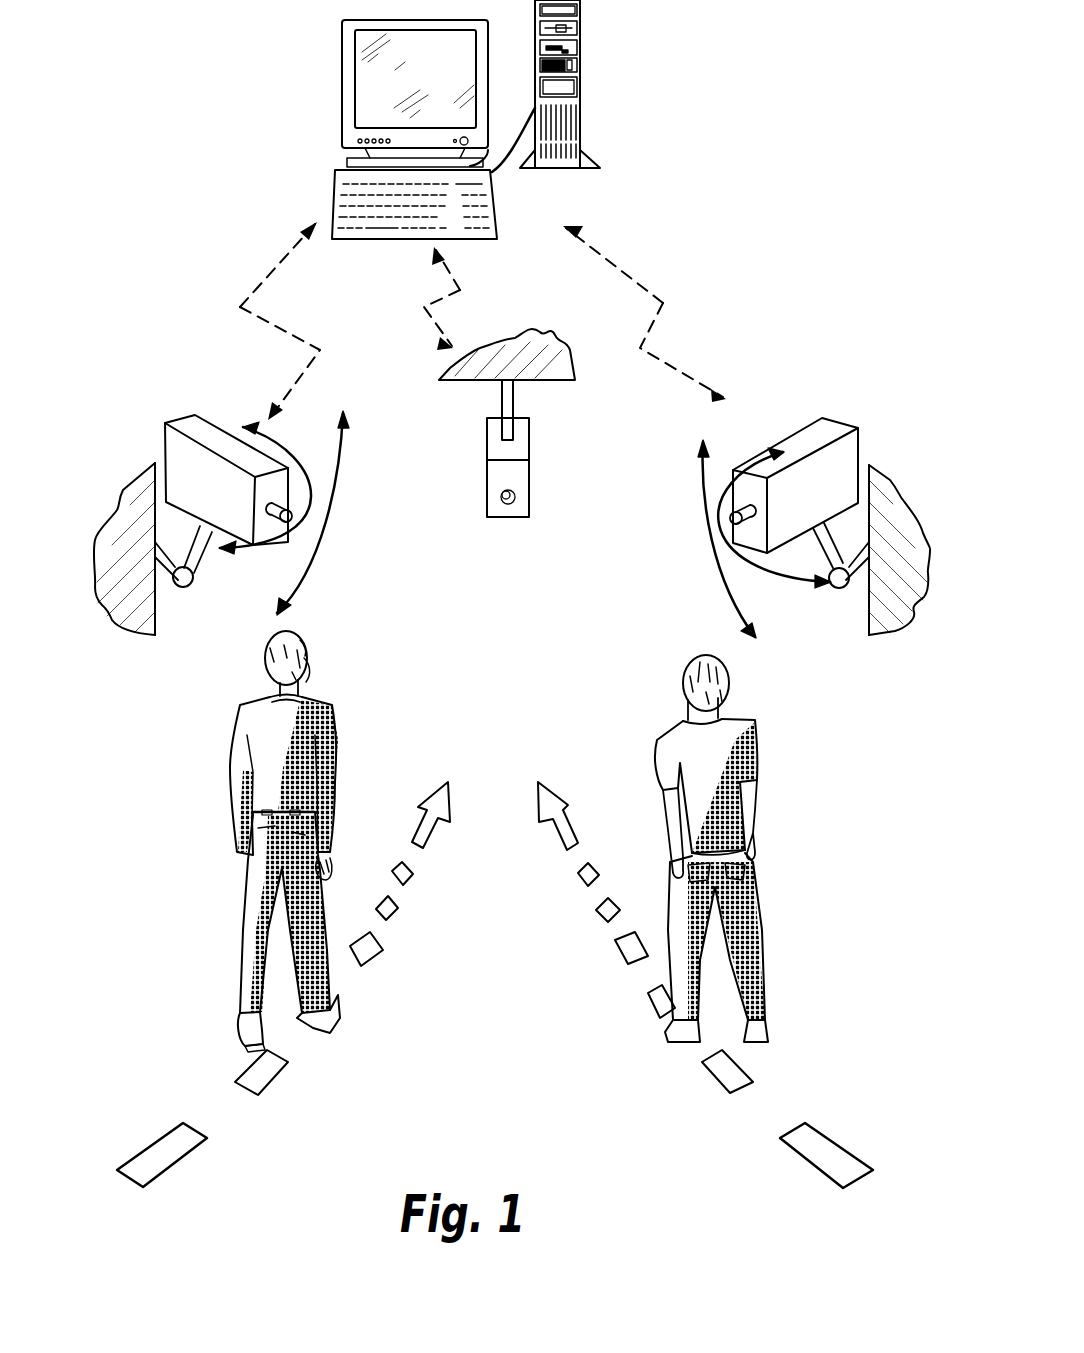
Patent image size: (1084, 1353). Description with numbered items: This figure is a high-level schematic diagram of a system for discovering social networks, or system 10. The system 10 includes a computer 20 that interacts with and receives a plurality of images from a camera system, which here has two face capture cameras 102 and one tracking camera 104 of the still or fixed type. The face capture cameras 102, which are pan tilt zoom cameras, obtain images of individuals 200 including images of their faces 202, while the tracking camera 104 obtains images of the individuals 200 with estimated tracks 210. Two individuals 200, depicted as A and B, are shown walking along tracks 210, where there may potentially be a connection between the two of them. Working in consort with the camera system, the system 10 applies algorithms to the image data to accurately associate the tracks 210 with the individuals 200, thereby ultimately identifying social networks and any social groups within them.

The system for discovering social networks 10 is at (246, 74).
The computer 20 is at (594, 103).
The face capture camera 102 is at (224, 424).
The tracking camera 104 is at (532, 445).
The individual 200 is at (216, 720).
The face 202 is at (308, 655).
The track 210 is at (400, 911).